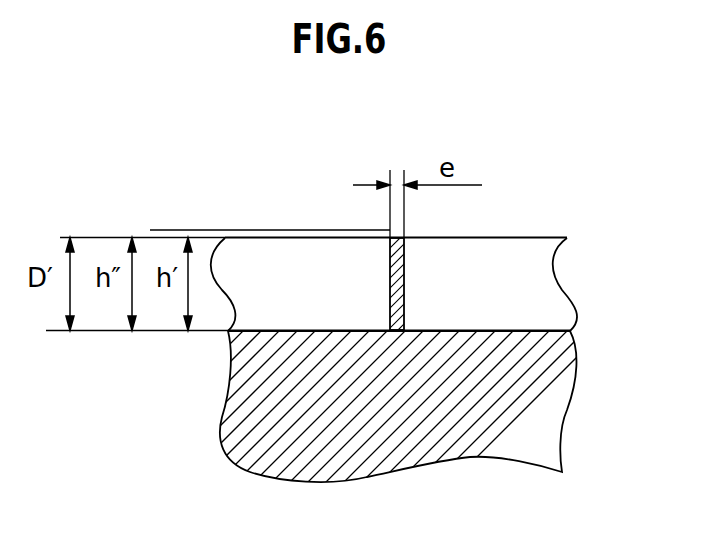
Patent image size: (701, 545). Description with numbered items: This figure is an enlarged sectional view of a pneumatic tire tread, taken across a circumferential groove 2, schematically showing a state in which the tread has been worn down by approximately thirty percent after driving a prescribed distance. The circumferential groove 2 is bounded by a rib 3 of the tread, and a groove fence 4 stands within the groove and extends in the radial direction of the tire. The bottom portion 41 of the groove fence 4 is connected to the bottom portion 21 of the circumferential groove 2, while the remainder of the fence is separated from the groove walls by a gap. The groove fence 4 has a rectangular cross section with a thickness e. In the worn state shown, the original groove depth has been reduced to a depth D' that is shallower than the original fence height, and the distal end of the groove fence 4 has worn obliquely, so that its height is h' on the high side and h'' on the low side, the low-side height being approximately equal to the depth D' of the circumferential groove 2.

The circumferential groove 2 is at (295, 272).
The rib 3 is at (300, 217).
The groove fence 4 is at (405, 267).
The bottom portion of the groove fence 41 is at (389, 329).
The bottom portion of the circumferential groove 21 is at (543, 330).